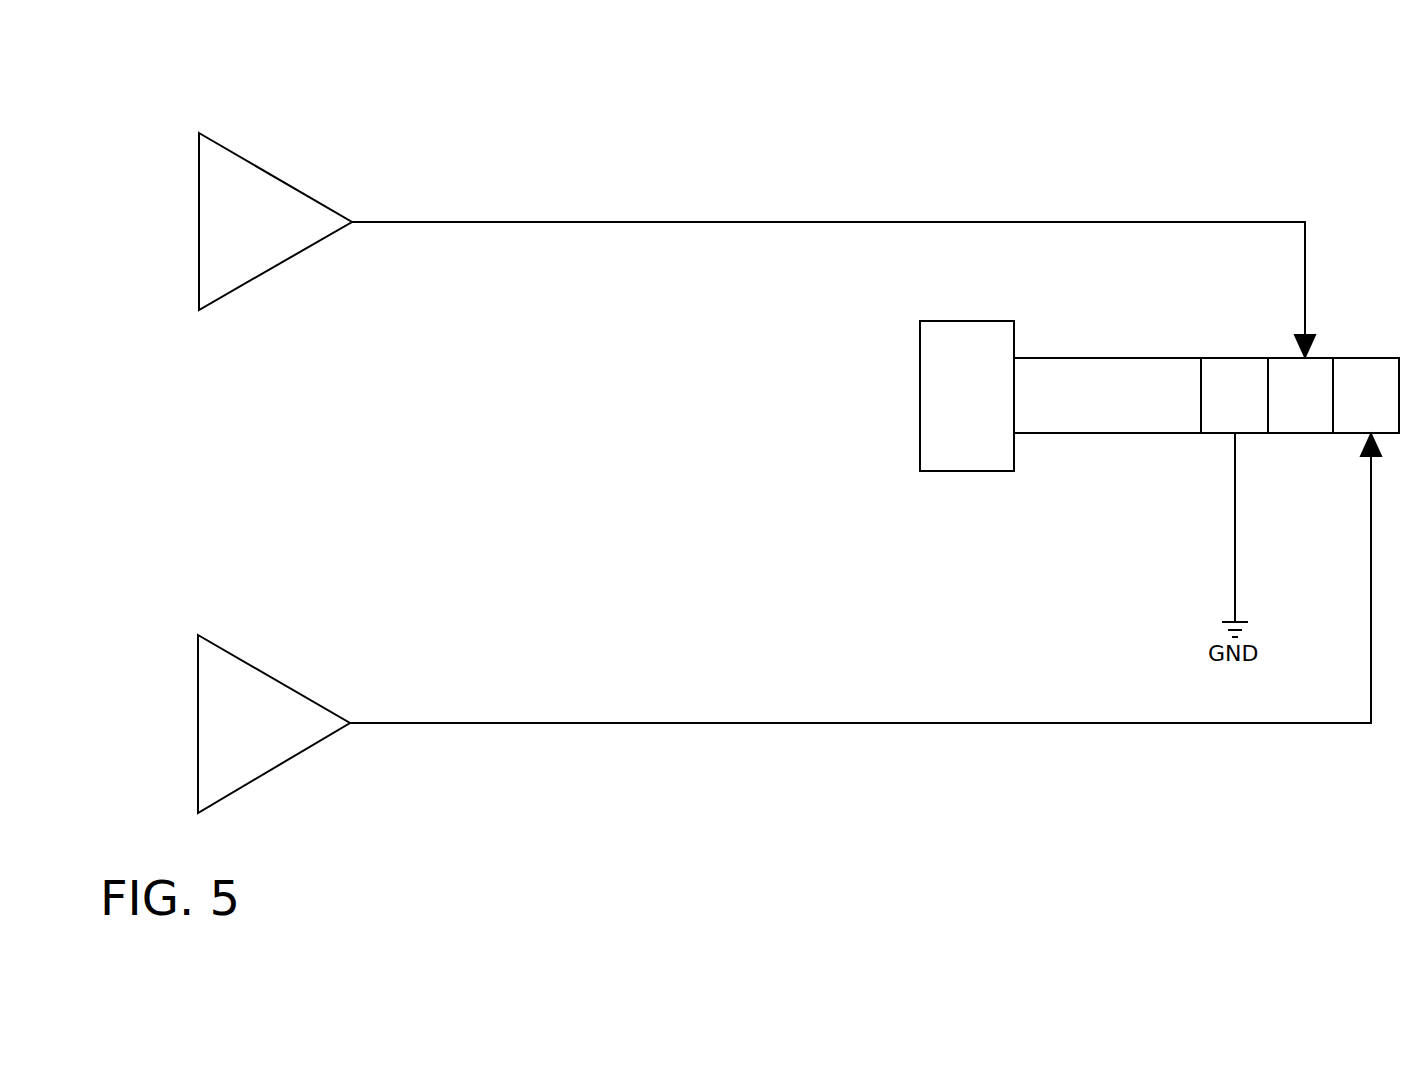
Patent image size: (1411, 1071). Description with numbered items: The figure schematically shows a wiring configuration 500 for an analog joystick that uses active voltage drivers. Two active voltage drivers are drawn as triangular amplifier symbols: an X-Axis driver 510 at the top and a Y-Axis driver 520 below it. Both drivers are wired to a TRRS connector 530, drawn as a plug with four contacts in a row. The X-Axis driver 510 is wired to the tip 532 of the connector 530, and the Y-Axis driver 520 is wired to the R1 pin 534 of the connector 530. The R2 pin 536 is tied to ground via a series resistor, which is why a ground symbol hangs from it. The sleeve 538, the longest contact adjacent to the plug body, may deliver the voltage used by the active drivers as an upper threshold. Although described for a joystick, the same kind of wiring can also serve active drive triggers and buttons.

The wiring configuration 500 is at (220, 62).
The X-Axis driver 510 is at (275, 221).
The Y-Axis driver 520 is at (274, 724).
The TRRS connector 530 is at (1125, 281).
The tip 532 is at (1366, 395).
The R1 pin 534 is at (1300, 395).
The R2 pin 536 is at (1234, 395).
The sleeve 538 is at (1107, 395).